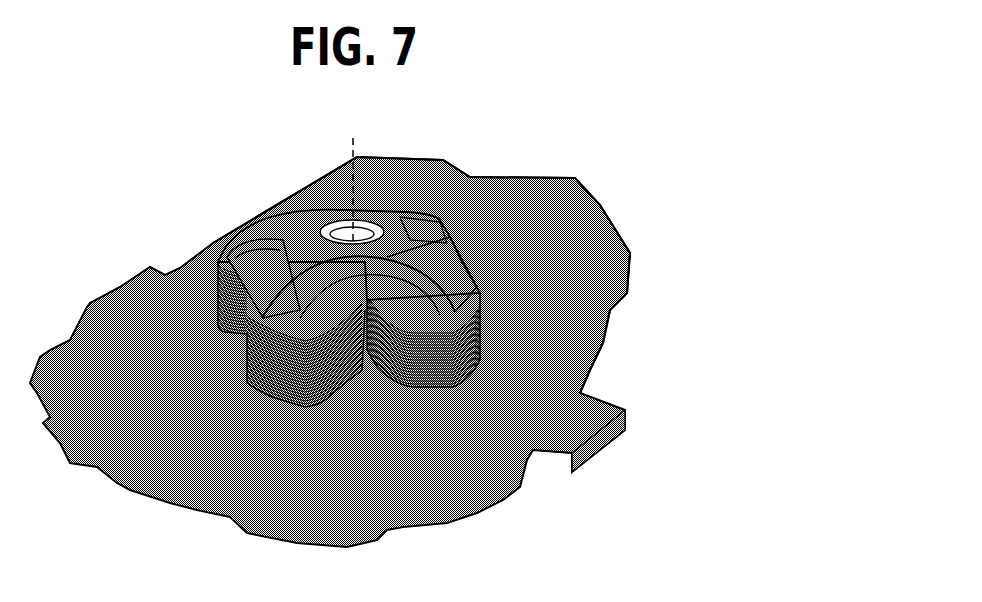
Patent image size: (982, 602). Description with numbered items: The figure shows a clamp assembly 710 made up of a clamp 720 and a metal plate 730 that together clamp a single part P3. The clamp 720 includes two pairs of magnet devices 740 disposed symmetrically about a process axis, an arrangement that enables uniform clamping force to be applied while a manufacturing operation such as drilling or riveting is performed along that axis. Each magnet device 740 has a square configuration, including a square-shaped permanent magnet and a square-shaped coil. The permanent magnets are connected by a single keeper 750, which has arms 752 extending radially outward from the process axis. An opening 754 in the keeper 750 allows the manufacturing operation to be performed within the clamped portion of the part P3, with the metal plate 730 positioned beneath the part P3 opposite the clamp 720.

The clamp assembly 710 is at (394, 349).
The clamp 720 is at (475, 240).
The metal plate 730 is at (597, 453).
The magnet device 740 is at (315, 402).
The keeper 750 is at (364, 234).
The arms 752 is at (447, 277).
The opening 754 is at (368, 235).
The part P3 is at (377, 540).